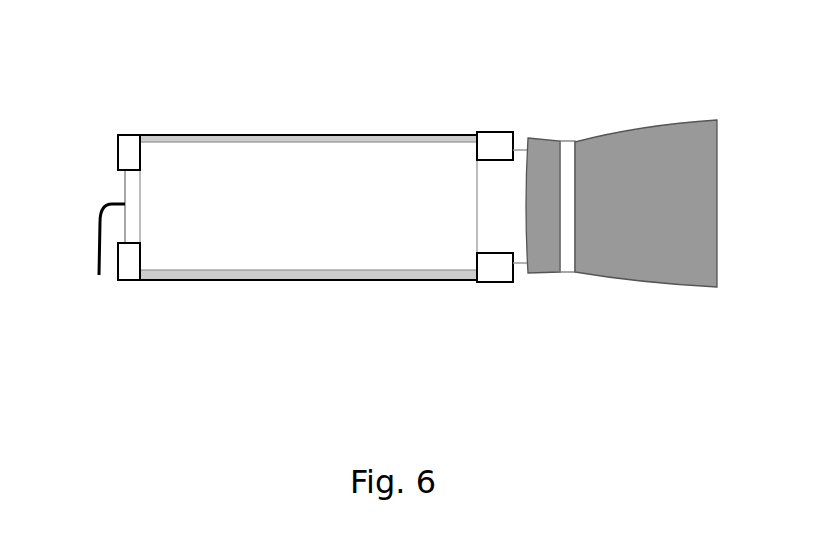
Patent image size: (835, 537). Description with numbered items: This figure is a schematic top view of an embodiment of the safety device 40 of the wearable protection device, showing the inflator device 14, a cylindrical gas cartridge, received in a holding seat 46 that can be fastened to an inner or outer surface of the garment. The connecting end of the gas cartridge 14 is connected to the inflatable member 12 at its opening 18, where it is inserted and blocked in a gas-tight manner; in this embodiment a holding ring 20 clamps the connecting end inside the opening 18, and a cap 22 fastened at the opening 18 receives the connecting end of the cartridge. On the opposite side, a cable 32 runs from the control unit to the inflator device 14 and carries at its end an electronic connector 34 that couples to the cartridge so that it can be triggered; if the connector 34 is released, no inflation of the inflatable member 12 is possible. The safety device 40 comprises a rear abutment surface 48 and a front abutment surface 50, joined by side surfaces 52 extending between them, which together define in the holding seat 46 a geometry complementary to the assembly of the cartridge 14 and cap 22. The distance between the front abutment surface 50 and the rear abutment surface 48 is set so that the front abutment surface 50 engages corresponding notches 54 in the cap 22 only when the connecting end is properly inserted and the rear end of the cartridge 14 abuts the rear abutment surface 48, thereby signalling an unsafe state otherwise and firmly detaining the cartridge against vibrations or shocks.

The inflatable member 12 is at (760, 117).
The inflator device 14 is at (360, 150).
The opening 18 is at (532, 258).
The holding ring 20 is at (565, 258).
The cap 22 is at (525, 132).
The cable 32 is at (82, 246).
The electronic connector 34 is at (124, 187).
The safety device 40 is at (153, 297).
The holding seat 46 is at (250, 272).
The rear abutment surface 48 is at (127, 155).
The front abutment surface 50 is at (493, 140).
The side surfaces 52 is at (282, 135).
The notches 54 is at (490, 256).